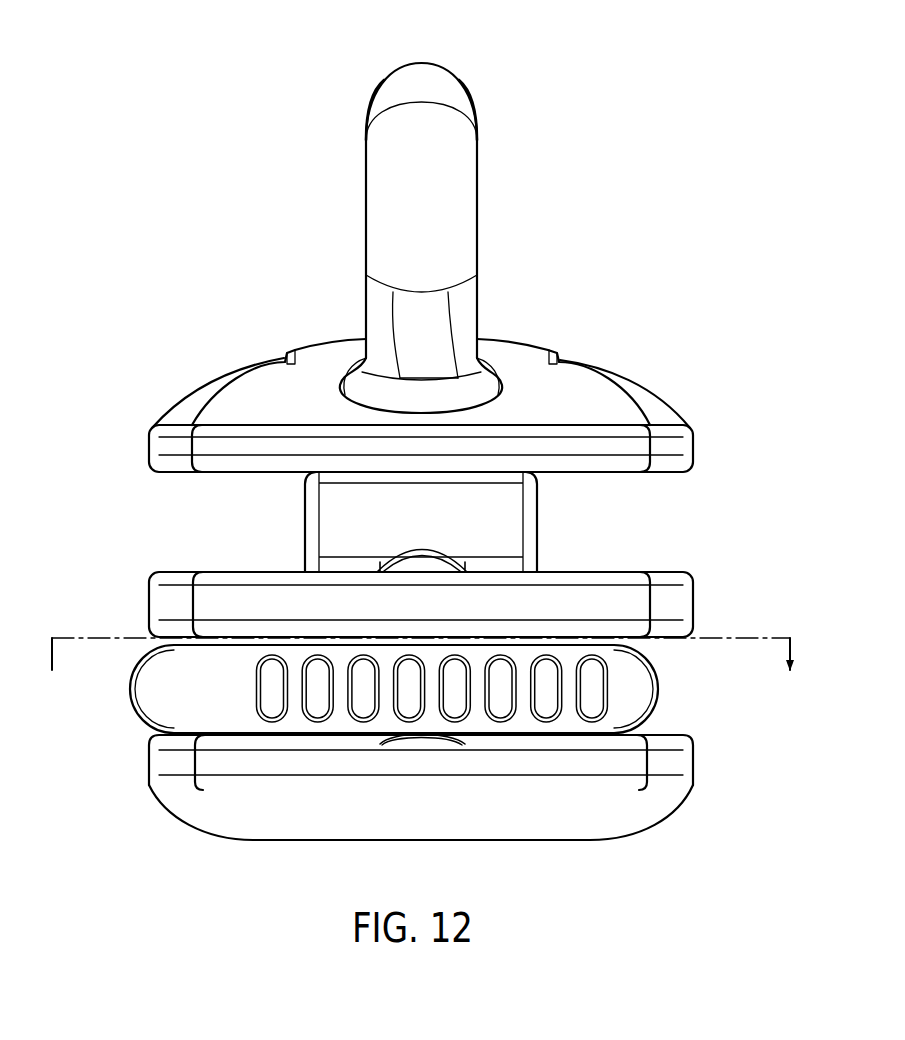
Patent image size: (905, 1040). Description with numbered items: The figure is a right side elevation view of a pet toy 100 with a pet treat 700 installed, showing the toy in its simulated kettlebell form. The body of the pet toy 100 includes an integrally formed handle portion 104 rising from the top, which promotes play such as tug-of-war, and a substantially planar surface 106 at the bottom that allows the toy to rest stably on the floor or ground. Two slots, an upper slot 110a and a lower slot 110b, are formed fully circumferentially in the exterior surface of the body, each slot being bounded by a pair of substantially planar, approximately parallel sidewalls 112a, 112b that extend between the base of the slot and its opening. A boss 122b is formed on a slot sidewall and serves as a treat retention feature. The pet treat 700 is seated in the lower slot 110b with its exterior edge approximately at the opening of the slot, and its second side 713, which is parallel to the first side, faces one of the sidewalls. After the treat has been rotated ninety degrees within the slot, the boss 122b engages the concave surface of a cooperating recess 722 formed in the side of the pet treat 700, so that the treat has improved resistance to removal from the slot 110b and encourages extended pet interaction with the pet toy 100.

The pet toy 100 is at (703, 122).
The handle portion 104 is at (401, 84).
The substantially planar surface 106 is at (550, 841).
The slot 110a is at (680, 504).
The slot 110b is at (680, 690).
The sidewall 112a is at (213, 473).
The sidewall 112b is at (274, 571).
The boss 122b is at (423, 563).
The pet treat 700 is at (152, 712).
The second side 713 is at (247, 735).
The recess 722 is at (416, 745).